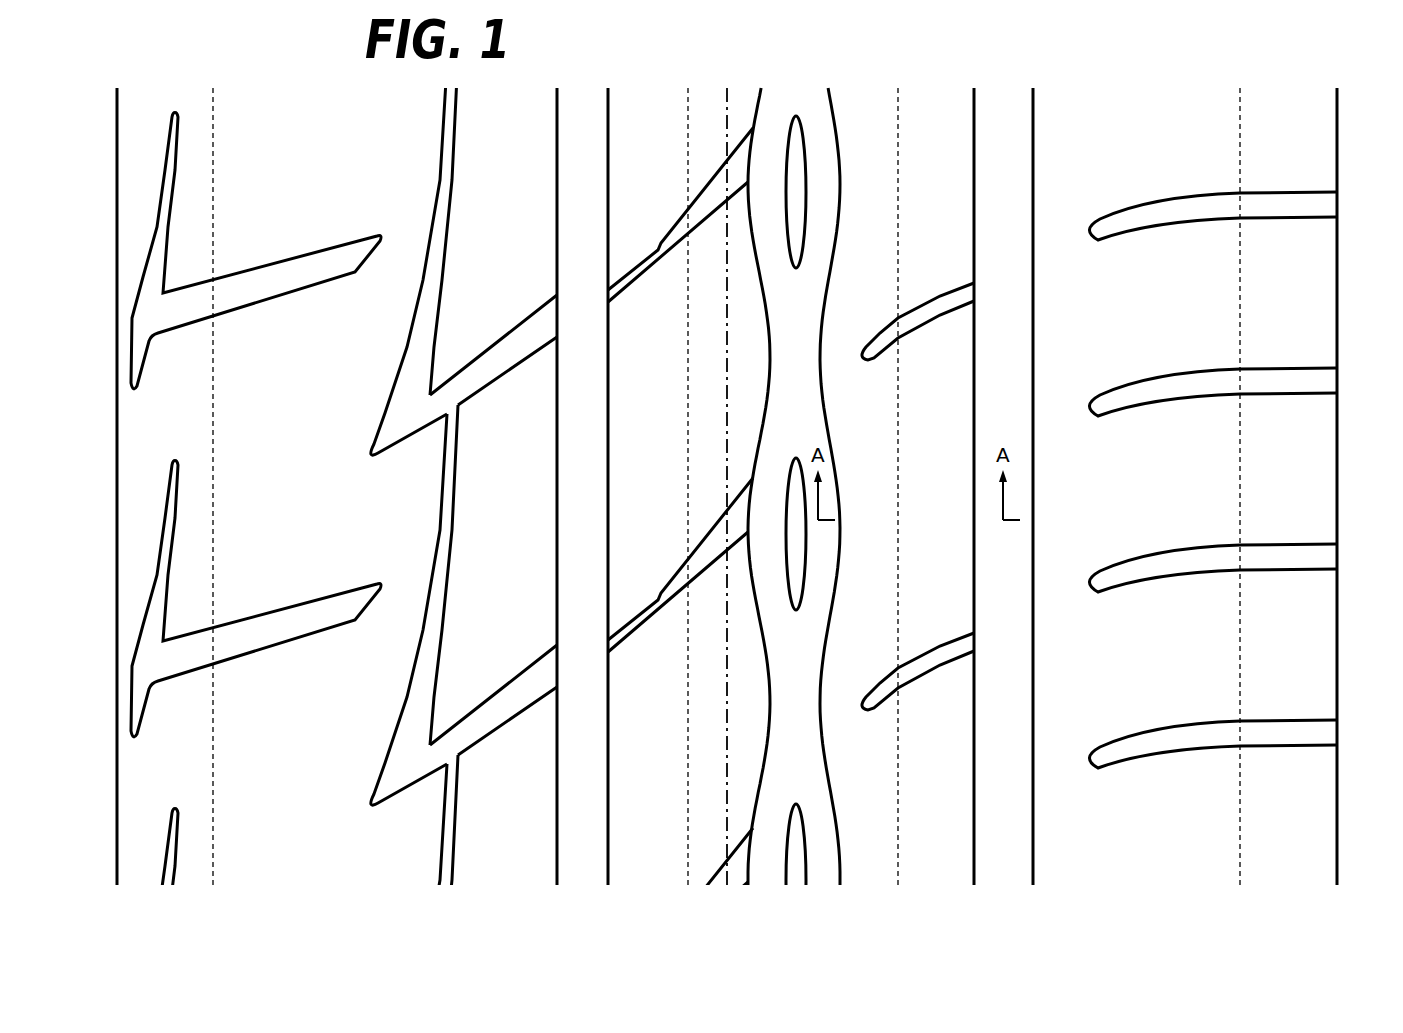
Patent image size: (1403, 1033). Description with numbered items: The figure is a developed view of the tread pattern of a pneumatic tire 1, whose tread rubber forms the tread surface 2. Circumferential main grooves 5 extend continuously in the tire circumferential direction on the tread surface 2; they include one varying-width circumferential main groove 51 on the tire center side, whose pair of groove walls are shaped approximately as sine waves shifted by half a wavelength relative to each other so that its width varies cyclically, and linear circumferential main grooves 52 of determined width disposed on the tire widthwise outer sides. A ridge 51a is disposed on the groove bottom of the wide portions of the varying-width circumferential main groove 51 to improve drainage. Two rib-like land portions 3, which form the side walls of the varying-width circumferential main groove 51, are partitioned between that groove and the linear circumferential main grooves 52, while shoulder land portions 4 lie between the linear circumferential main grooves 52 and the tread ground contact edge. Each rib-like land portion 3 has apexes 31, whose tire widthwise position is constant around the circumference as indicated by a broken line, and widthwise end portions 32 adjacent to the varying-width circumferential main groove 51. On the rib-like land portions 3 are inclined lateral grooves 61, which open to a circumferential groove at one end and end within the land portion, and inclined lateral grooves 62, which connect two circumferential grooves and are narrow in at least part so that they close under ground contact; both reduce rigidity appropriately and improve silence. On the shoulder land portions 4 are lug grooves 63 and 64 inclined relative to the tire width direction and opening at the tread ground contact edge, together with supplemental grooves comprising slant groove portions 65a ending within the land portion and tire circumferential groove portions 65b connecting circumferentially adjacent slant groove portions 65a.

The pneumatic tire 1 is at (1318, 55).
The tread surface 2 is at (1083, 105).
The rib-like land portion 3 is at (655, 394).
The shoulder land portion 4 is at (509, 195).
The circumferential main groove 5 is at (592, 842).
The apex 31 is at (687, 842).
The widthwise end portion 32 is at (758, 262).
The varying-width circumferential main groove 51 is at (773, 862).
The ridge 51a is at (793, 130).
The linear circumferential main groove 52 is at (795, 486).
The lateral groove 61 is at (942, 307).
The lateral groove 62 is at (677, 227).
The lug groove 63 is at (1170, 215).
The lug groove 64 is at (338, 262).
The slant groove portion 65a is at (518, 343).
The tire circumferential groove portion 65b is at (445, 187).